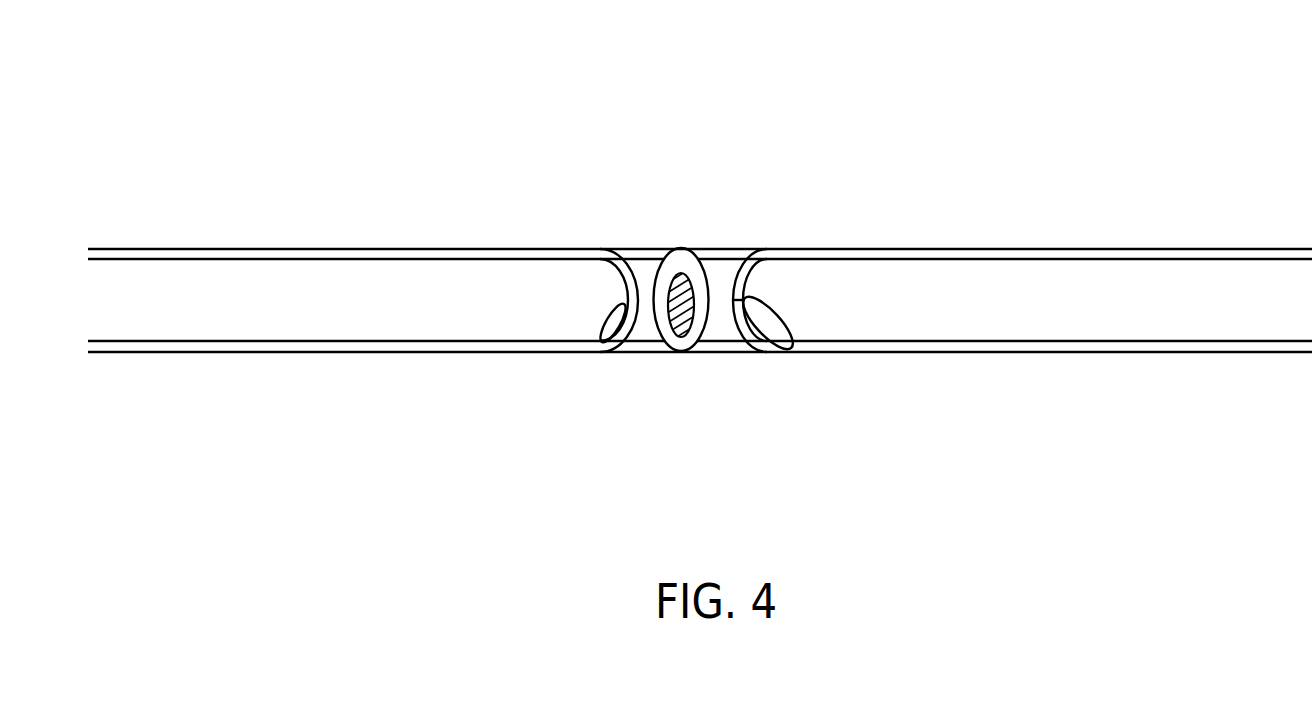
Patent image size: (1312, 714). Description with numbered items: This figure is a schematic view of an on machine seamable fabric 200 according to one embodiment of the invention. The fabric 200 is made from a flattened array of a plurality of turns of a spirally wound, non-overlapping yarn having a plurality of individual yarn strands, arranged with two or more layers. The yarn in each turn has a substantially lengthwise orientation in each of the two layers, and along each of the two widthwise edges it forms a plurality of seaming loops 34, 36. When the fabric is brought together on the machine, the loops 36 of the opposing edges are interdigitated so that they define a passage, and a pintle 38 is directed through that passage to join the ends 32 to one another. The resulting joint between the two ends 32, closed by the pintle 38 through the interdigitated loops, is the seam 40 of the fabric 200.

The fabric 200 is at (380, 134).
The ends 32 is at (398, 354).
The seaming loops 34 is at (612, 350).
The seaming loops 36 is at (690, 354).
The pintle 38 is at (685, 262).
The seam 40 is at (757, 115).